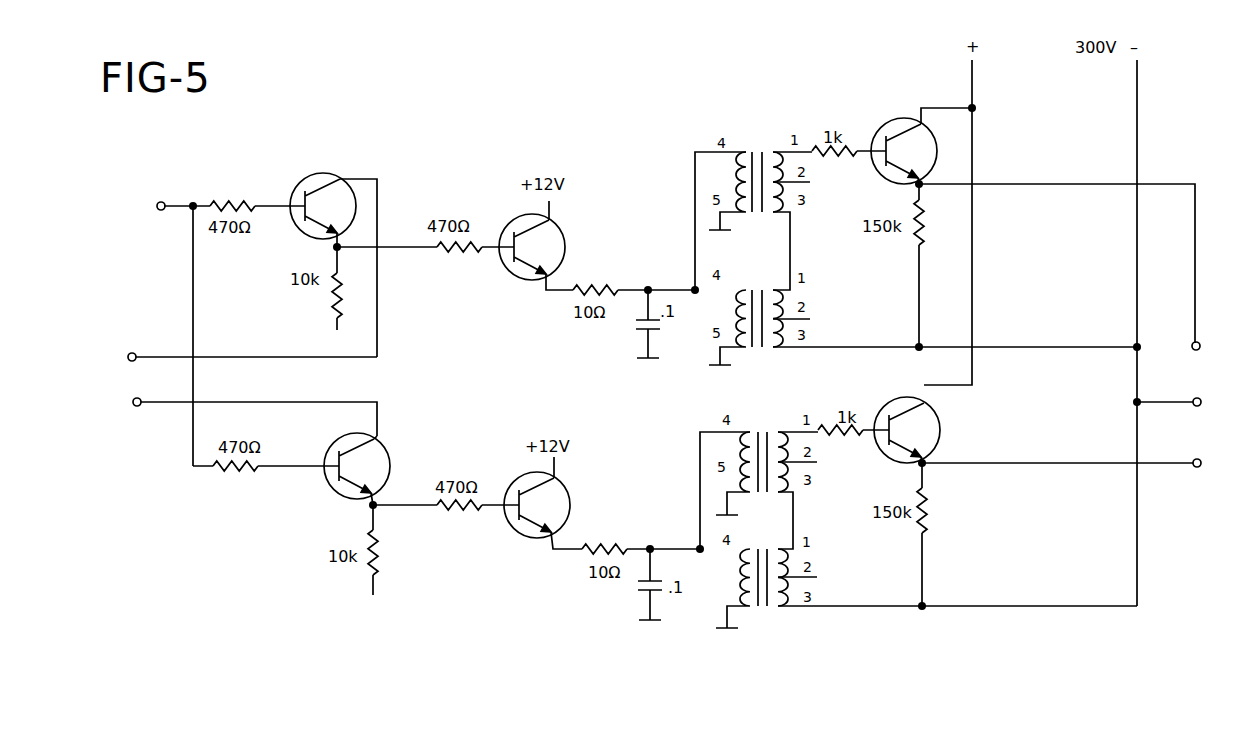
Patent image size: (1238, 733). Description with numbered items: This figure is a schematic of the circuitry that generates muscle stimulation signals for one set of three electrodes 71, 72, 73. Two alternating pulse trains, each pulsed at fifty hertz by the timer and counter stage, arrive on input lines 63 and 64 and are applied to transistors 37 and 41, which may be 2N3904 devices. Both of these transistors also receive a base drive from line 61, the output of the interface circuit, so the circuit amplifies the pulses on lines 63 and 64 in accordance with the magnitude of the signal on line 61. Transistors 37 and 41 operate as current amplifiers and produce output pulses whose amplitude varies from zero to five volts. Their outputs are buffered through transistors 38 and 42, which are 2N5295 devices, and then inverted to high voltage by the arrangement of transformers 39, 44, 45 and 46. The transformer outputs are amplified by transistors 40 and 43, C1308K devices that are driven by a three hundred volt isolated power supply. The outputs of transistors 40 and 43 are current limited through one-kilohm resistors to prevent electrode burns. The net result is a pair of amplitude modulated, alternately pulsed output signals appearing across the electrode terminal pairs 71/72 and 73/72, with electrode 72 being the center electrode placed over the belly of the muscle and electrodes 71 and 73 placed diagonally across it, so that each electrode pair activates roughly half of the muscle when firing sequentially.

The transistor 37 is at (325, 176).
The transistor 38 is at (562, 236).
The transformer 39 is at (757, 150).
The transistor 40 is at (937, 146).
The transistor 41 is at (388, 446).
The transistor 42 is at (570, 487).
The transistor 43 is at (942, 423).
The transformer 44 is at (761, 349).
The transformer 45 is at (763, 422).
The transformer 46 is at (765, 610).
The line 61 is at (176, 205).
The output line 63 is at (163, 355).
The output line 64 is at (158, 403).
The electrode 71 is at (1200, 344).
The electrode 72 is at (1196, 398).
The electrode 73 is at (1197, 459).